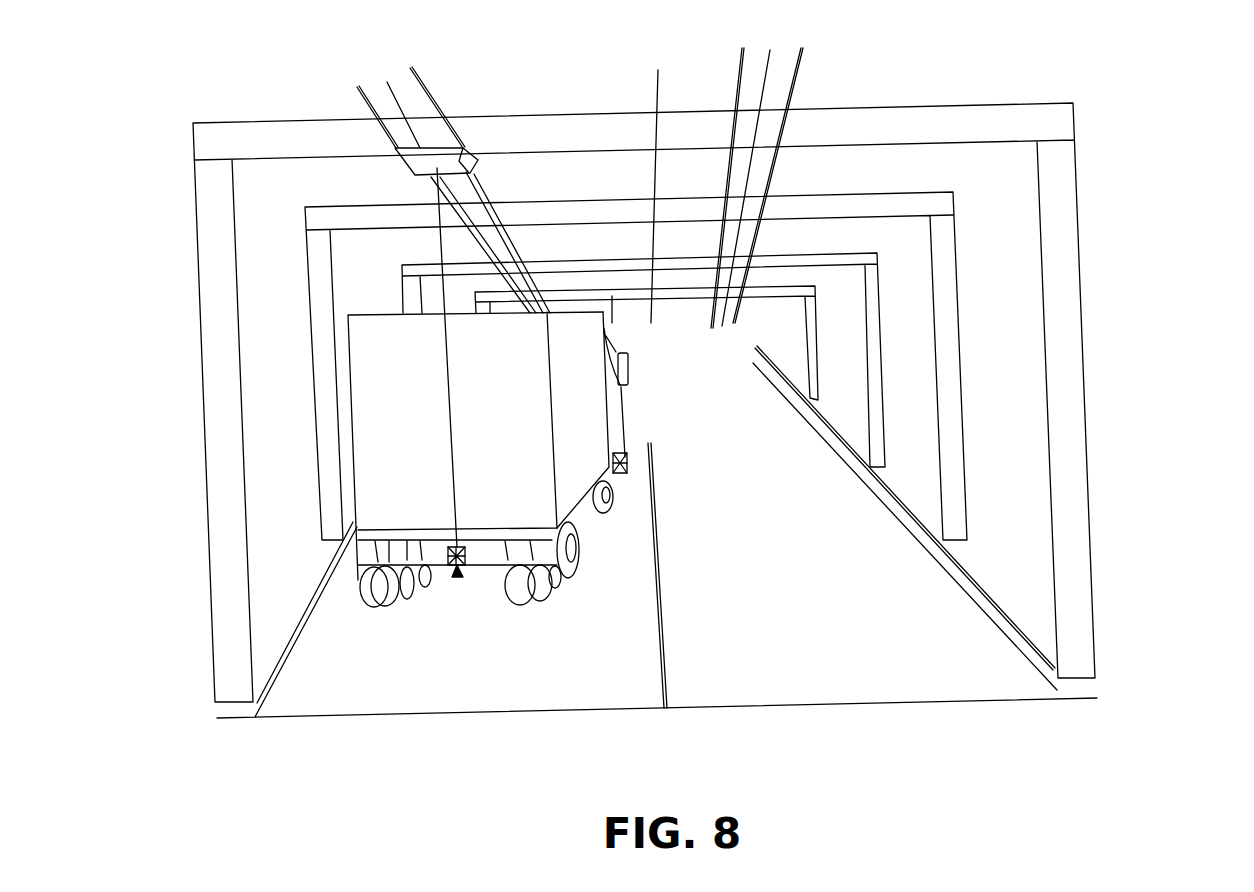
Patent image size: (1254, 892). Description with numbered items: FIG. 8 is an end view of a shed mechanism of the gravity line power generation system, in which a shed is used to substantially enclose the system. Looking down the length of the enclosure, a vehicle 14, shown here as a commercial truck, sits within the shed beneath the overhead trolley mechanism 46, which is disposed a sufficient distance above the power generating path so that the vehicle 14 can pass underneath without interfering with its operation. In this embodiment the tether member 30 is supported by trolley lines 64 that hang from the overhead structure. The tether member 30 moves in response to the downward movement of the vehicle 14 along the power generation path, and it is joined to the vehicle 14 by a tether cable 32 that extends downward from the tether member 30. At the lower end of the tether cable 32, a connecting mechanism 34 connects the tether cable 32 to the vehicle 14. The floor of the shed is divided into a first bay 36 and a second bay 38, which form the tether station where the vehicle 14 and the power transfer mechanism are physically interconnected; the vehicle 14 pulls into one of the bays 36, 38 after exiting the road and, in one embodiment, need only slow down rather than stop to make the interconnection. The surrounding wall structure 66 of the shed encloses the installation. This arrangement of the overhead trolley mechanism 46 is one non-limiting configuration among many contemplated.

The vehicle 14 is at (388, 387).
The tether member 30 is at (470, 153).
The tether cable 32 is at (450, 478).
The connecting mechanism 34 is at (456, 578).
The first bay 36 is at (445, 660).
The second bay 38 is at (801, 655).
The overhead trolley mechanism 46 is at (1095, 132).
The trolley lines 64 is at (797, 80).
The support frame 66 is at (1008, 298).